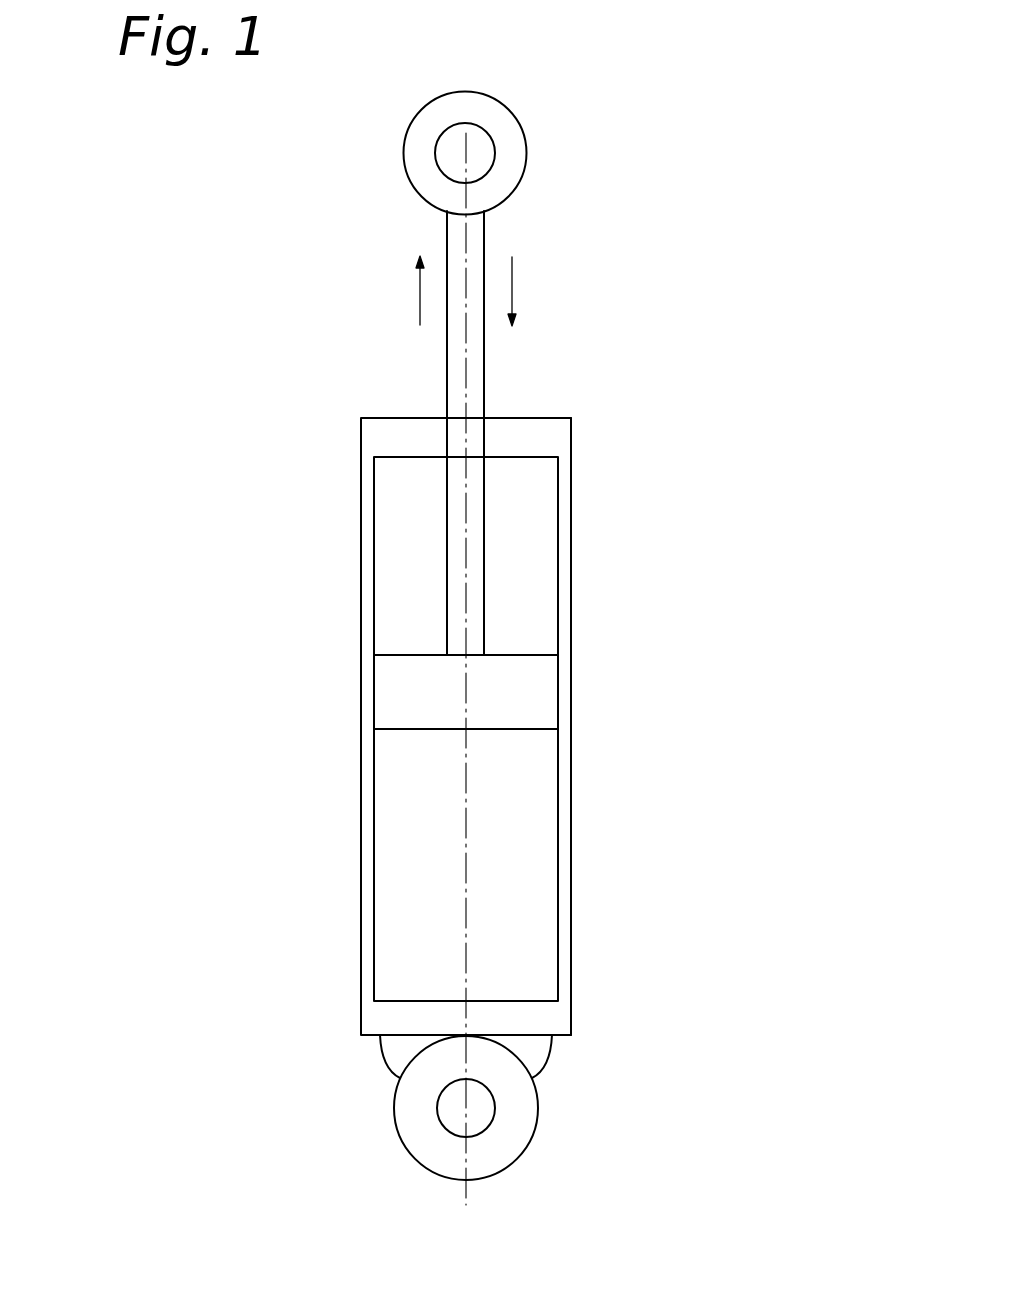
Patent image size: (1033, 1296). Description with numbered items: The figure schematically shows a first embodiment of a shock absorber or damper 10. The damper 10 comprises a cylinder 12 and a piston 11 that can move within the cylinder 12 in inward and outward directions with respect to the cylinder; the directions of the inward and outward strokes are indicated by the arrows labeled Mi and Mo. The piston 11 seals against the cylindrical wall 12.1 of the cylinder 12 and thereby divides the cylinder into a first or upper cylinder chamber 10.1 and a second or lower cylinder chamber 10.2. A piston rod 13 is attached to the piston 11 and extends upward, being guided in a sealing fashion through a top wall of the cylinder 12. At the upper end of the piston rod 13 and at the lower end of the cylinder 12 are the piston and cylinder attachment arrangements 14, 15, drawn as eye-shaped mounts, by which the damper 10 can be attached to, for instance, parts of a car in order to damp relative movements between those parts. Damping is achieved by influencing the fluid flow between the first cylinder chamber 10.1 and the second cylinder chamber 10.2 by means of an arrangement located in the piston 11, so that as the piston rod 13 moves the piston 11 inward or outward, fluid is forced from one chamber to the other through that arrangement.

The damper 10 is at (583, 262).
The first cylinder chamber 10.1 is at (528, 522).
The second cylinder chamber 10.2 is at (523, 895).
The piston 11 is at (525, 695).
The cylinder 12 is at (530, 430).
The cylindrical wall 12.1 is at (565, 605).
The piston rod 13 is at (460, 503).
The piston attachment arrangement 14 is at (483, 115).
The cylinder attachment arrangement 15 is at (517, 1122).